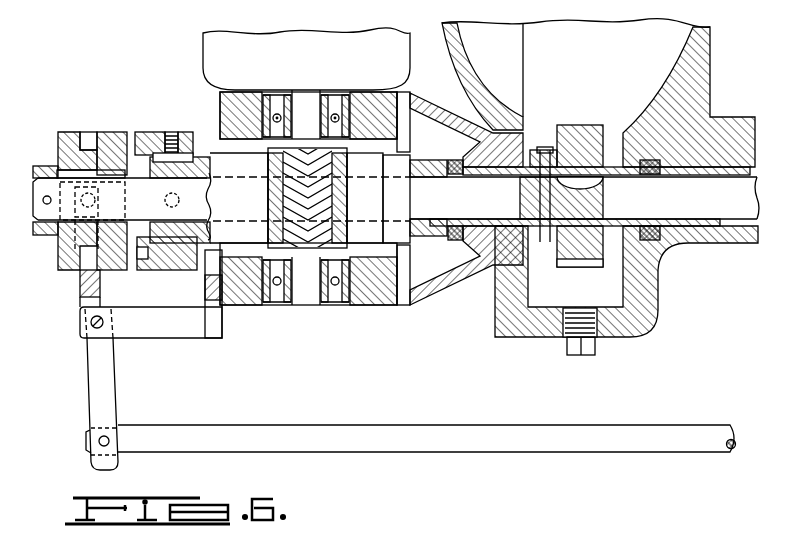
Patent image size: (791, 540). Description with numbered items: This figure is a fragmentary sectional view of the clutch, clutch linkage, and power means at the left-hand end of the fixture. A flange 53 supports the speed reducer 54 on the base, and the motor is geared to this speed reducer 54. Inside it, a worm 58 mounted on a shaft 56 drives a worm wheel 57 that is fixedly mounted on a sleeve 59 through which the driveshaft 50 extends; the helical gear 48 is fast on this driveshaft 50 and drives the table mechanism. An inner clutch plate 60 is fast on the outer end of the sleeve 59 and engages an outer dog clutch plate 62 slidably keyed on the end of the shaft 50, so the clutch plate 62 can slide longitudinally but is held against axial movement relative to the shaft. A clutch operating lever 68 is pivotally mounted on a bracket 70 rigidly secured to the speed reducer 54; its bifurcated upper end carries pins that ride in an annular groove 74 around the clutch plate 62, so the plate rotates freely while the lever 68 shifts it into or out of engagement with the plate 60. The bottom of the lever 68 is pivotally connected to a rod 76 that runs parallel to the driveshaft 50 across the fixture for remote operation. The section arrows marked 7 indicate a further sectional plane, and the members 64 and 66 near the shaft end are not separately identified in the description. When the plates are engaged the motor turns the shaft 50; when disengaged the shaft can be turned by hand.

The section line 7- 7 is at (43, 130).
The helical gear 48 is at (574, 262).
The driveshaft 50 is at (198, 197).
The flange 53 is at (446, 102).
The speed reducer 54 is at (307, 60).
The shaft 56 is at (307, 100).
The worm wheel 57 is at (275, 222).
The worm 58 is at (300, 172).
The sleeve 59 is at (380, 207).
The inner clutch plate 60 is at (158, 132).
The outer dog clutch plate 62 is at (100, 132).
The plate 64 is at (70, 172).
The shaft 66 is at (113, 196).
The clutch operating lever 68 is at (103, 376).
The bracket 70 is at (178, 288).
The annular groove 74 is at (80, 132).
The rod 76 is at (250, 432).